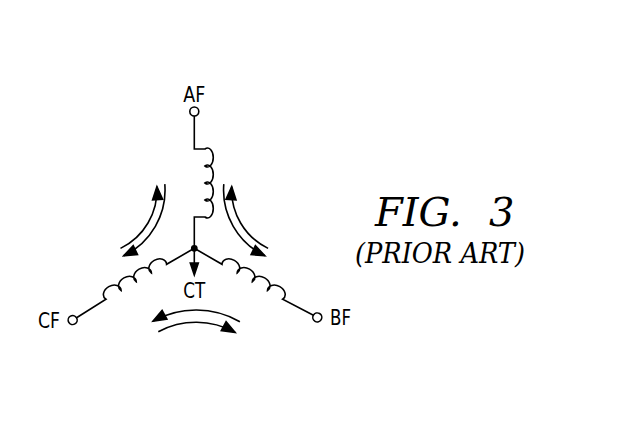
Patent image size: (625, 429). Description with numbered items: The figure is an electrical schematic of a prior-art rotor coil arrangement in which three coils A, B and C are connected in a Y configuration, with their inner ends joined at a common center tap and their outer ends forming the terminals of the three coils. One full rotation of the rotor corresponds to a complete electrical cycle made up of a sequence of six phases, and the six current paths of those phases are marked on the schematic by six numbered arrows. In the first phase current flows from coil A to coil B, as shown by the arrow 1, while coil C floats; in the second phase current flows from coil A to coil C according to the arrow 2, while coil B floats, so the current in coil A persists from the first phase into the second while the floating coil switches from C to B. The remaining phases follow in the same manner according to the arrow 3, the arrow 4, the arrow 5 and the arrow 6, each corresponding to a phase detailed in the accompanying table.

The arrow 1 is at (228, 208).
The arrow 2 is at (162, 210).
The arrow 3 is at (207, 311).
The arrow 4 is at (249, 232).
The arrow 5 is at (138, 232).
The arrow 6 is at (178, 324).